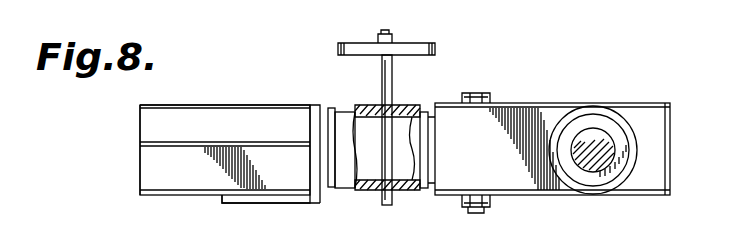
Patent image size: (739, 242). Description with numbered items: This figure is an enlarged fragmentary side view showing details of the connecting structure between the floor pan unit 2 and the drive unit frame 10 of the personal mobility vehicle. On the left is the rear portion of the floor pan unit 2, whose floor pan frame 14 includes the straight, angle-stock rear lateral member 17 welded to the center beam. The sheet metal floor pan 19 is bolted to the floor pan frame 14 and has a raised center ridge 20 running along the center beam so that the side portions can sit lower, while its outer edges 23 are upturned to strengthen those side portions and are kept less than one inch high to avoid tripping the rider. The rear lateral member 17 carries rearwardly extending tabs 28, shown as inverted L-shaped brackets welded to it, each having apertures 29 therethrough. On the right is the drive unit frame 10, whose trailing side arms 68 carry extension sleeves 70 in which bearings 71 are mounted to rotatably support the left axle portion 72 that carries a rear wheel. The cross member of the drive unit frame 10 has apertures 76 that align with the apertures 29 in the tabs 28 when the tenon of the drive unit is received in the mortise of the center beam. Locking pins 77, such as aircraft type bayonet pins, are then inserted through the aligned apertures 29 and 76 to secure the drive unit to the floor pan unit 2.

The floor pan unit 2 is at (216, 101).
The drive unit frame 10 is at (527, 103).
The floor pan frame 14 is at (233, 205).
The rear lateral member 17 is at (273, 203).
The floor pan 19 is at (150, 172).
The raised center ridge 20 is at (268, 105).
The outer edges 23 is at (145, 142).
The tabs 28 is at (334, 105).
The apertures 29 is at (392, 89).
The trailing side arms 68 is at (422, 191).
The extension sleeves 70 is at (660, 183).
The bearings 71 is at (614, 152).
The left axle portion 72 is at (607, 138).
The apertures 76 is at (418, 147).
The locking pins 77 is at (434, 43).